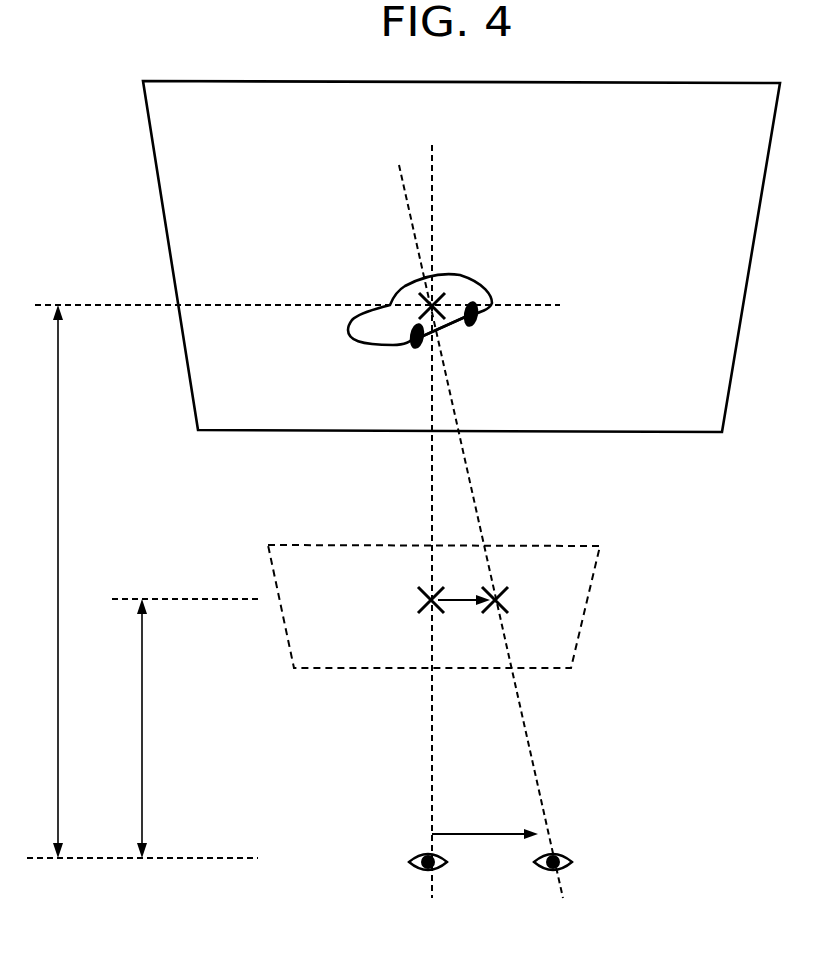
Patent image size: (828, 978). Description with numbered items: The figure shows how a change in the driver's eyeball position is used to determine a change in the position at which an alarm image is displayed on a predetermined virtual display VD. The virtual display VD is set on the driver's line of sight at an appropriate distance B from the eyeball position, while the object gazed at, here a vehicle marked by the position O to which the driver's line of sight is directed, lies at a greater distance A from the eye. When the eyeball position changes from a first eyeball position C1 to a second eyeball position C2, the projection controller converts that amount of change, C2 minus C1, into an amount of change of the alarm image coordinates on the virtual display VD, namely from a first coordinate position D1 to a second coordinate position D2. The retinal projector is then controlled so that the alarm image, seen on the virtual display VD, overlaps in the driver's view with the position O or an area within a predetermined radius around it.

The position to which the driver's line of sight is directed O is at (392, 312).
The virtual display VD is at (575, 545).
The first coordinate position of the alarm image on the virtual display D1 is at (368, 589).
The second coordinate position of the alarm image on the virtual display D2 is at (537, 589).
The first eyeball position C1 is at (364, 847).
The second eyeball position C2 is at (565, 847).
The distance from the eyeball position to the gazed position A is at (293, 581).
The distance from the eyeball position to the virtual display B is at (186, 728).